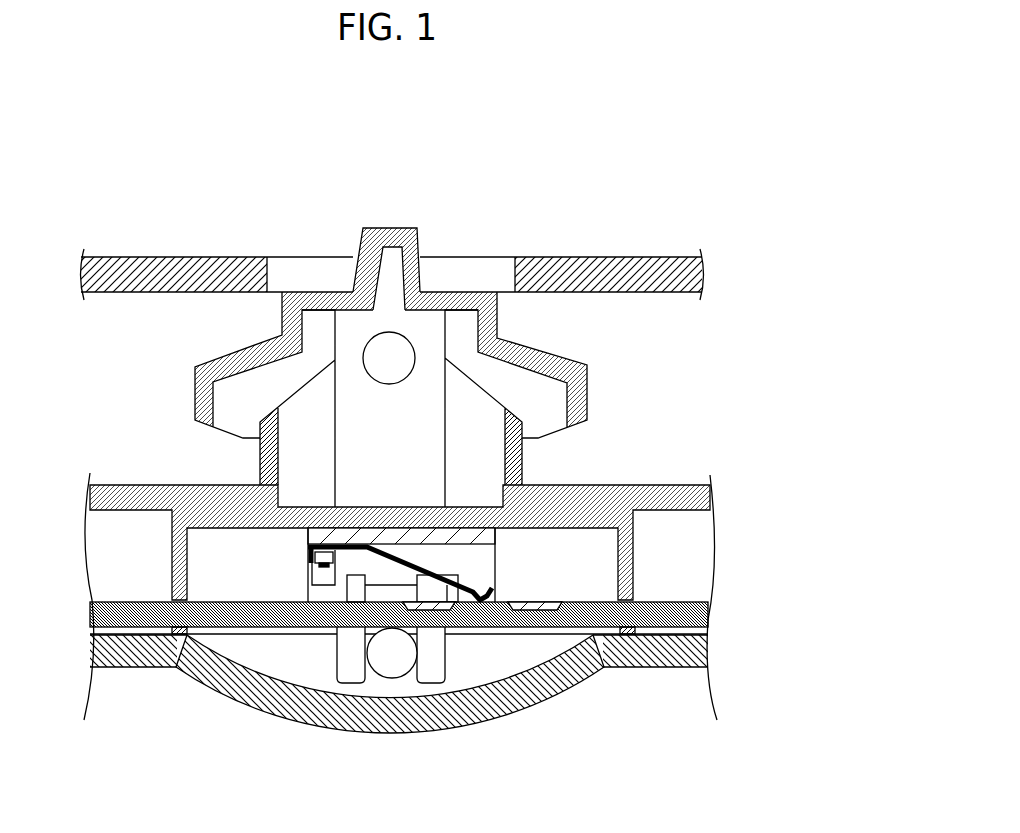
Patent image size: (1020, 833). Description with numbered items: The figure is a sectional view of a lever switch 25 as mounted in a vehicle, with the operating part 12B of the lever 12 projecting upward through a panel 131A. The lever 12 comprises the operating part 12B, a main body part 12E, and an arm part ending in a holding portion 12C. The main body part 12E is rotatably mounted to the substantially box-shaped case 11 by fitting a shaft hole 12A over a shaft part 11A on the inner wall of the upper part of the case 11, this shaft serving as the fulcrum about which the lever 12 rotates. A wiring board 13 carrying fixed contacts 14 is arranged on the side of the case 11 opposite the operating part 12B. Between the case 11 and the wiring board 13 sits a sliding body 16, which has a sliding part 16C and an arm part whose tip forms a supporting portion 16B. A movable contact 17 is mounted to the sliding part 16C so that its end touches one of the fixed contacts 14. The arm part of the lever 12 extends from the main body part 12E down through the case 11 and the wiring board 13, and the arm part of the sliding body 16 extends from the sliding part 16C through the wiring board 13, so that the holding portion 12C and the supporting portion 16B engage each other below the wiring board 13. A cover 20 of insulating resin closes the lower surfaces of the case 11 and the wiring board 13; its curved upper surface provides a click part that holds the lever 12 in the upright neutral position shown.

The case 11 is at (683, 493).
The shaft part 11A is at (395, 357).
The lever 12 is at (366, 474).
The shaft hole 12A is at (367, 347).
The operating part 12B is at (383, 235).
The holding portion 12C is at (352, 668).
The main body part 12E is at (580, 397).
The wiring board 13 is at (668, 617).
The fixed contact 14 is at (540, 613).
The sliding body 16 is at (584, 565).
The supporting portion 16B is at (395, 657).
The sliding part 16C is at (488, 538).
The movable contact 17 is at (400, 563).
The cover 20 is at (142, 648).
The lever switch 25 is at (435, 207).
The panel 131A is at (597, 272).